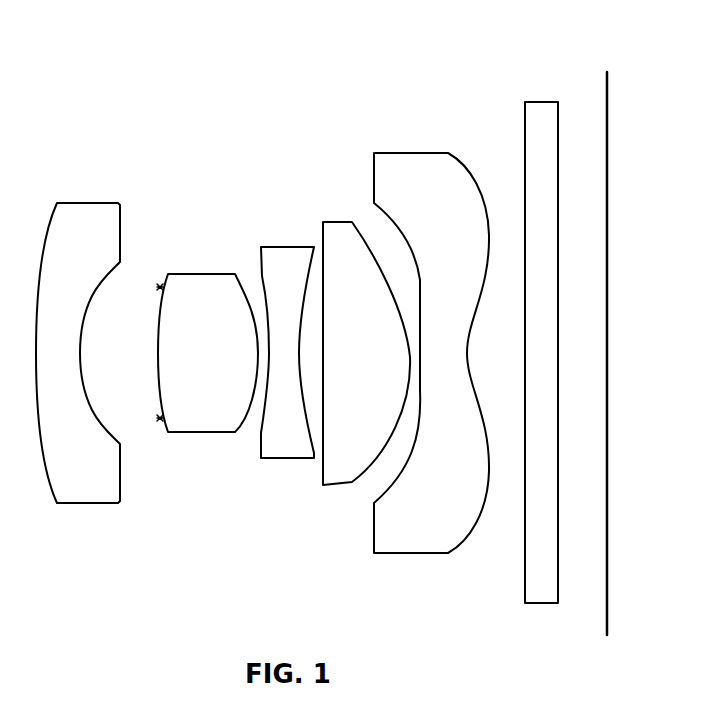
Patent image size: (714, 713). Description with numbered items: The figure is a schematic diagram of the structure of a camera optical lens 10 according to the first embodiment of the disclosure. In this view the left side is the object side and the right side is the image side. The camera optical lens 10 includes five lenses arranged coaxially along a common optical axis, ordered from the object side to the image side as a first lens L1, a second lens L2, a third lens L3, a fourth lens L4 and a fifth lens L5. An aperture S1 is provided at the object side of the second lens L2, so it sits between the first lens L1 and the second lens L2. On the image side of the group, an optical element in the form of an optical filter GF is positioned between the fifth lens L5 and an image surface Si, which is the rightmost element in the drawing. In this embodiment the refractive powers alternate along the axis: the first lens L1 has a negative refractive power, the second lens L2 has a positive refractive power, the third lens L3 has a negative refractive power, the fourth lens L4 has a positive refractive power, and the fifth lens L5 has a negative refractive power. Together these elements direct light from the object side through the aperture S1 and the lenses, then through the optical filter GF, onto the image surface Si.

The camera optical lens 10 is at (258, 46).
The first lens L1 is at (78, 336).
The second lens L2 is at (208, 335).
The aperture S1 is at (152, 372).
The third lens L3 is at (287, 334).
The fourth lens L4 is at (365, 338).
The fifth lens L5 is at (431, 337).
The optical filter GF is at (542, 335).
The image surface Si is at (608, 337).